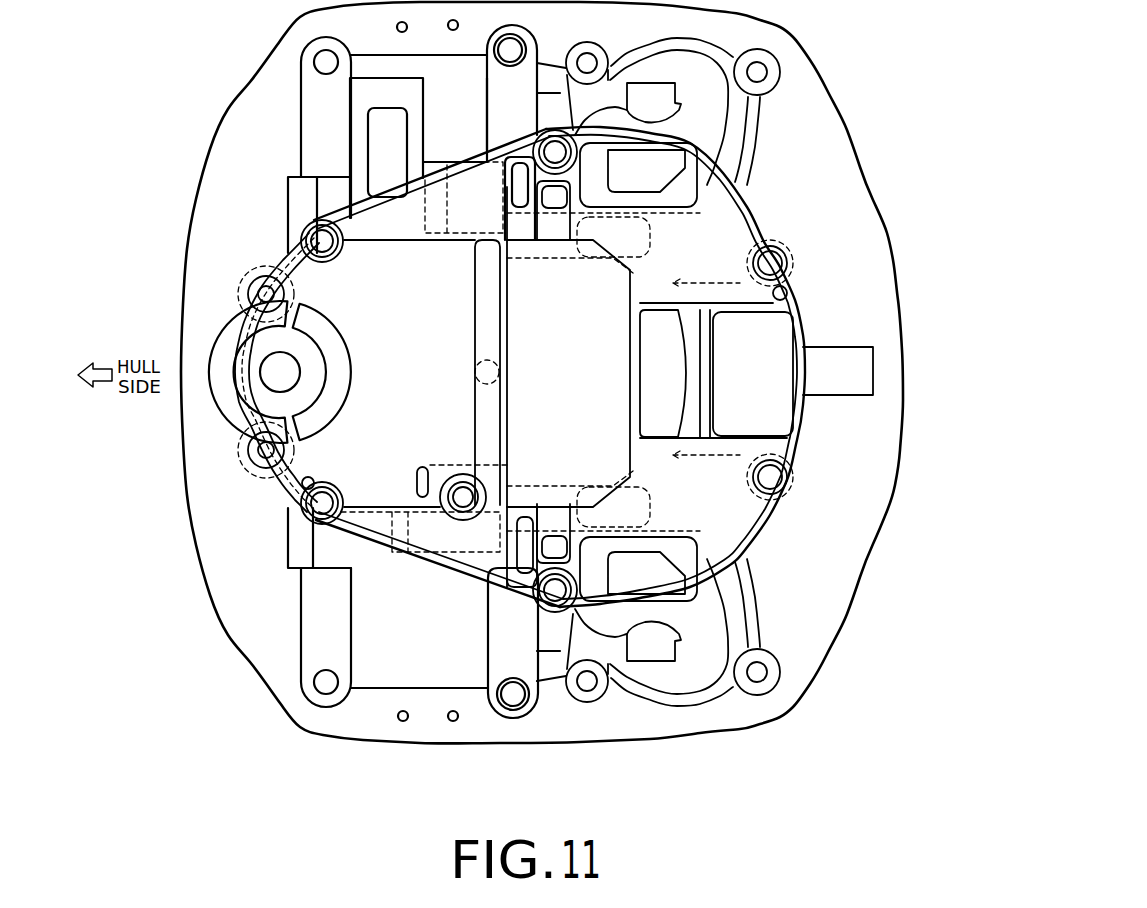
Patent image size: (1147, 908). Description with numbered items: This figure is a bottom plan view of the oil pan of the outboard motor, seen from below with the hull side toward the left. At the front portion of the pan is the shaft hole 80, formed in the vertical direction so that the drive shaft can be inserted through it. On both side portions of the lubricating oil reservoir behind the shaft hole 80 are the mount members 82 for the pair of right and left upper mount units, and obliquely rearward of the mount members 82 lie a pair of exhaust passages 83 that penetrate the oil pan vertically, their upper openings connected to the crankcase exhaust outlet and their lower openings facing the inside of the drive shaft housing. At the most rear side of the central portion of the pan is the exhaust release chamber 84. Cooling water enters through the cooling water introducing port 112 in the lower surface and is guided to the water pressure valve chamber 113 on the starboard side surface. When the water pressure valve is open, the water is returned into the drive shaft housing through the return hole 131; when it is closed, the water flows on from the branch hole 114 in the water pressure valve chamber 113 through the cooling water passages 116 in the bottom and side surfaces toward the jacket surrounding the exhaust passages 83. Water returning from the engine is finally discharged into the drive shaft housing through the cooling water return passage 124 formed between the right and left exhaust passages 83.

The shaft hole 80 is at (270, 387).
The mount member 82 is at (330, 165).
The exhaust passage 83 is at (703, 125).
The exhaust release chamber 84 is at (777, 408).
The cooling water introducing port 112 is at (461, 520).
The water pressure valve chamber 113 is at (427, 537).
The branch hole 114 is at (483, 307).
The cooling water passage 116 is at (552, 258).
The cooling water return passage 124 is at (667, 352).
The return hole 131 is at (422, 468).